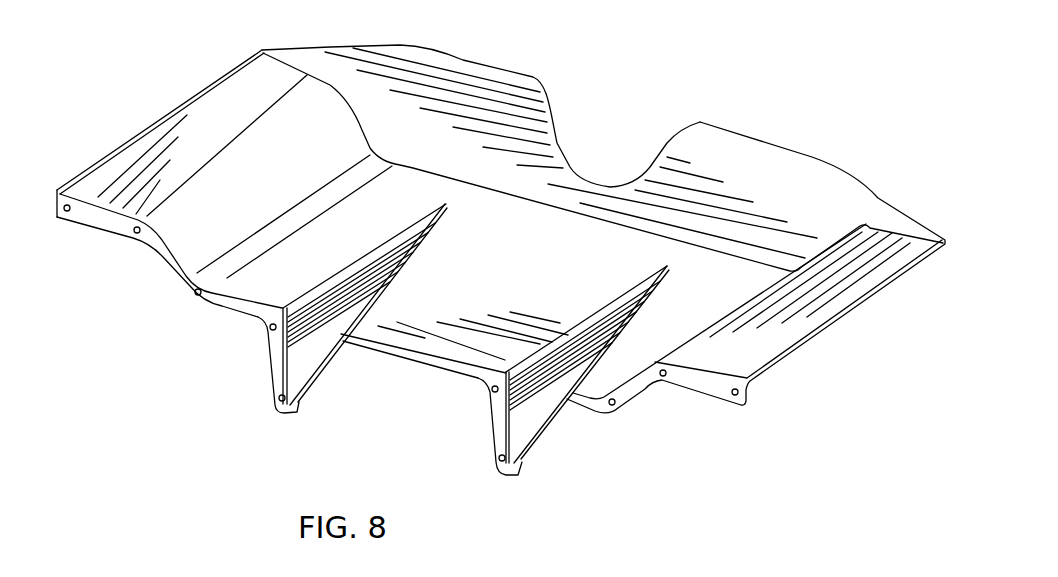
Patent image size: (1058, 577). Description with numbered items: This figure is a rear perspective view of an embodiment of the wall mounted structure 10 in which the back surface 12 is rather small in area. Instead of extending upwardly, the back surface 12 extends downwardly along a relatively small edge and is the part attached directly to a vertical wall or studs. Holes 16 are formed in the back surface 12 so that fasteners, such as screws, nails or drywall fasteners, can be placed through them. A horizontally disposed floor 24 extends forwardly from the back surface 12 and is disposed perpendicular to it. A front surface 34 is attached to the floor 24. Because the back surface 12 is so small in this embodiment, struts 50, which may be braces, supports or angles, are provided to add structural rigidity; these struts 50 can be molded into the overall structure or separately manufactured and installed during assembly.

The wall mounted structure 10 is at (875, 82).
The back surface 12 is at (108, 222).
The holes 16 is at (268, 331).
The floor 24 is at (413, 302).
The front surface 34 is at (760, 173).
The struts 50 is at (312, 352).